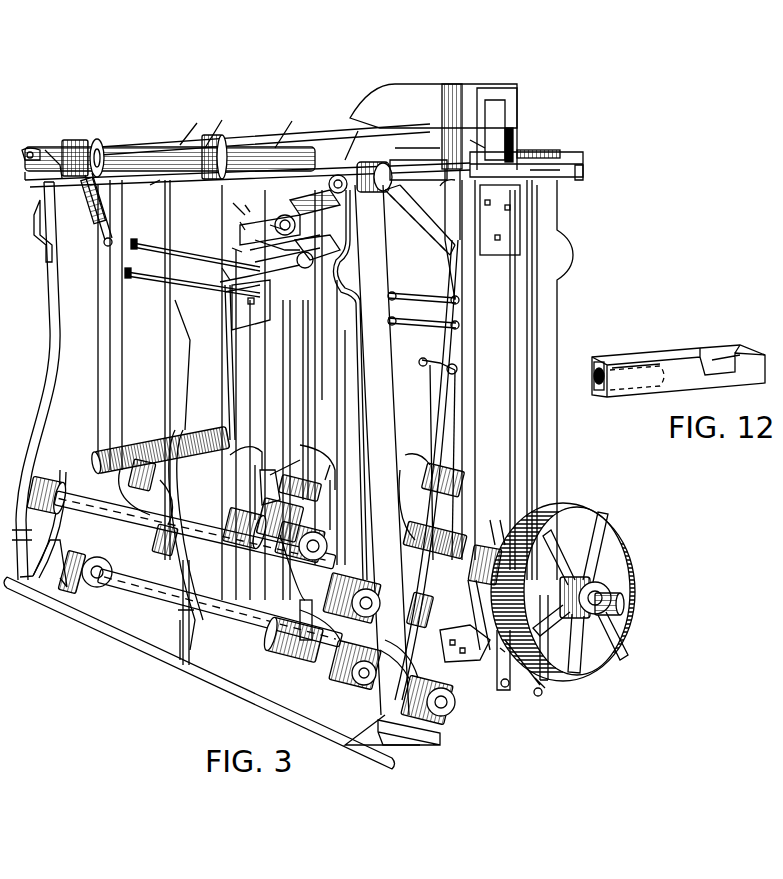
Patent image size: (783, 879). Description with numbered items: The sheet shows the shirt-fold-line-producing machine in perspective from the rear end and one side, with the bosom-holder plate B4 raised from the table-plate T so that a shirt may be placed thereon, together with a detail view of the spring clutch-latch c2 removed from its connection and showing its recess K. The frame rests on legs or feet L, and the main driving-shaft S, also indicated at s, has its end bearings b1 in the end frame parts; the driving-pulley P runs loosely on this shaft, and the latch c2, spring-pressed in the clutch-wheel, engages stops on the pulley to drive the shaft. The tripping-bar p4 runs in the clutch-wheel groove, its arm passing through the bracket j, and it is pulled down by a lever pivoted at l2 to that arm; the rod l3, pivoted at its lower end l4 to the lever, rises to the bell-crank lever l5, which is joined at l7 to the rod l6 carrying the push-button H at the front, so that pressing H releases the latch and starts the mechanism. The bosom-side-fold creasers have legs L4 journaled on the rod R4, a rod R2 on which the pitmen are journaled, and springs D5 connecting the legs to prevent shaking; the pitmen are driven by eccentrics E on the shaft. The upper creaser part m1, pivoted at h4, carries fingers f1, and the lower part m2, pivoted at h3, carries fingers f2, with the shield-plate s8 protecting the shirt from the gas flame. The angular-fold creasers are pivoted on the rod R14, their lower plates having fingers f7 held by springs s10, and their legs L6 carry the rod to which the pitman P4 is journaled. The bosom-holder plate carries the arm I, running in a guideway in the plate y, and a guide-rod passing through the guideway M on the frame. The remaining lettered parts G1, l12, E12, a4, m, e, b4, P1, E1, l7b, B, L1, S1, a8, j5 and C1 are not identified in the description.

In FIG. 3, the bosom-holder plate B4 is at (300, 140).
In FIG. 3, the table-plate T is at (120, 158).
In FIG. 3, the pivot of upper part m' h4 is at (225, 150).
In FIG. 3, the arm I is at (433, 106).
In FIG. 3, the guideway M is at (418, 142).
In FIG. 3, the post G1 is at (515, 112).
In FIG. 3, the rod l12 is at (446, 162).
In FIG. 3, the bar E12 is at (555, 165).
In FIG. 3, the upper part of bosom-side-fold creaser m1 is at (575, 170).
In FIG. 3, the lower part of bosom-side-fold creaser m2 is at (490, 190).
In FIG. 3, the plate y is at (483, 145).
In FIG. 3, the legs of crease-folder L4 is at (321, 375).
In FIG. 3, the connection of rod l6 to bell-crank lever l7 is at (462, 325).
In FIG. 3, the bell-crank lever l5 is at (436, 290).
In FIG. 3, the rod l3 is at (434, 469).
In FIG. 3, the legs or feet L is at (254, 450).
In FIG. 3, the legs of angular-fold-creasing device L6 is at (341, 480).
In FIG. 3, the eccentric E is at (134, 370).
In FIG. 3, the push-button H is at (100, 275).
In FIG. 3, the fingers of plate m' f1 is at (137, 247).
In FIG. 3, the bracket a4 is at (36, 150).
In FIG. 3, the fingers of plate m2 f2 is at (44, 148).
In FIG. 3, the rod l6 is at (210, 282).
In FIG. 3, the rod or bar R14 is at (240, 243).
In FIG. 3, the shield-plate s8 is at (235, 201).
In FIG. 3, the springs s10 is at (240, 228).
In FIG. 3, the tripping-bar p4 is at (240, 211).
In FIG. 3, the main driving-shaft s is at (273, 407).
In FIG. 3, the fingers of lower plate n2 f7 is at (225, 265).
In FIG. 3, the bracket j is at (151, 190).
In FIG. 3, the pivot of lower part m2 h3 is at (275, 133).
In FIG. 3, the bracket m is at (256, 126).
In FIG. 3, the springs D5 is at (165, 430).
In FIG. 3, the rod or bar R2 is at (153, 526).
In FIG. 3, the end bearings b1 is at (195, 530).
In FIG. 3, the main driving-shaft S is at (146, 492).
In FIG. 3, the shaft e is at (207, 569).
In FIG. 3, the roller b4 is at (276, 518).
In FIG. 3, the bracket P1 is at (280, 487).
In FIG. 3, the bracket E1 is at (300, 475).
In FIG. 3, the rod or bar R4 is at (255, 620).
In FIG. 3, the pivot of lever l' to arm a3 l2 is at (538, 692).
In FIG. 12, the pivot of lever l' to arm a3 l2 is at (597, 378).
In FIG. 3, the link l7b is at (310, 574).
In FIG. 3, the roller B is at (422, 520).
In FIG. 3, the base L1 is at (222, 623).
In FIG. 3, the pitman P4 is at (473, 570).
In FIG. 3, the driving-pulley P is at (630, 576).
In FIG. 3, the shaft S1 is at (625, 607).
In FIG. 3, the spoke a8 is at (580, 602).
In FIG. 3, the lower end of rod l3 l4 is at (498, 686).
In FIG. 3, the bracket j5 is at (500, 650).
In FIG. 3, the bracket C1 is at (497, 532).
In FIG. 12, the recess K is at (708, 352).
In FIG. 12, the spring clutch-latch c2 is at (662, 355).